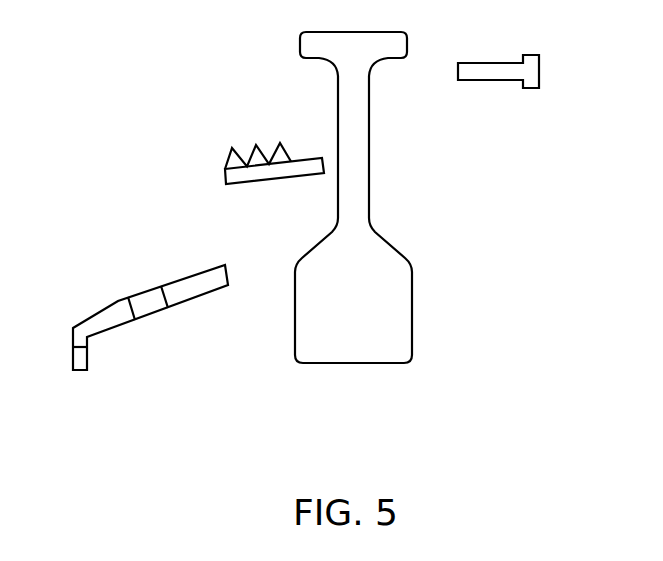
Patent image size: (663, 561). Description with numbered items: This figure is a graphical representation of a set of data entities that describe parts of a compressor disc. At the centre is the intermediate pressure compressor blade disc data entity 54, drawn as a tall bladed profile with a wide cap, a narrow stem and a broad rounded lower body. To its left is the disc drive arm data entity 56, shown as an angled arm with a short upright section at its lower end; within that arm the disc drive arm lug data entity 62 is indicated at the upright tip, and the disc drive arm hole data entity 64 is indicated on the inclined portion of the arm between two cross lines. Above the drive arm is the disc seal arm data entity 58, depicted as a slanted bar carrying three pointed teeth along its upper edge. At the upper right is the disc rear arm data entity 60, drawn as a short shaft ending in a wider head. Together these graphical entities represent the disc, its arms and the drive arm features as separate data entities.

The intermediate pressure (IP) compressor blade disc data entity 54 is at (398, 288).
The disc drive arm data entity 56 is at (127, 352).
The disc seal arm data entity 58 is at (223, 183).
The disc rear arm data entity 60 is at (540, 75).
The disc drive arm lug data entity 62 is at (88, 358).
The disc drive arm hole data entity 64 is at (143, 300).